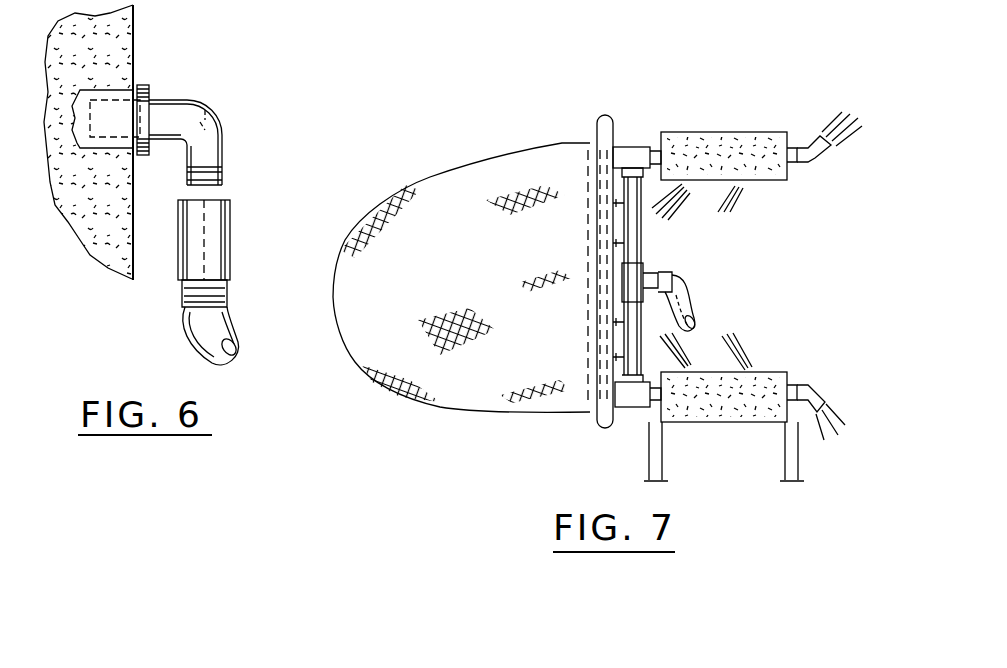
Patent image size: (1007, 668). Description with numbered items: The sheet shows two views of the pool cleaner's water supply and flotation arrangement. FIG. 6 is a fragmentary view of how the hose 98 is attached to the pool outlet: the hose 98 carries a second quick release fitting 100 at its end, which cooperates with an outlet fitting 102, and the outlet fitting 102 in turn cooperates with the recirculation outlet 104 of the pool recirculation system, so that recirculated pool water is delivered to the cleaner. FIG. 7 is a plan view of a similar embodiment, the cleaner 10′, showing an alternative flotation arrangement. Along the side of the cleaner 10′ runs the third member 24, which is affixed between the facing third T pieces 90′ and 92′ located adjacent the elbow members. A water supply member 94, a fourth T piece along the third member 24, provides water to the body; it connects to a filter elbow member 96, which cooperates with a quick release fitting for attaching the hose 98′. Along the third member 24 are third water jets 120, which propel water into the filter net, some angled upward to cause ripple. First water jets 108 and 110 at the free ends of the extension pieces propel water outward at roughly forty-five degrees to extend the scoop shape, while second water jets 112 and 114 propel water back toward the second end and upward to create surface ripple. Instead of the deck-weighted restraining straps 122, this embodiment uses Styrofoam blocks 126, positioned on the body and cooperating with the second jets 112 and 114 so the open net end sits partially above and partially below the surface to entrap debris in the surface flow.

In FIG. 7, the cleaner 10′ is at (474, 151).
In FIG. 7, the third member 24 is at (641, 240).
In FIG. 7, the third T piece 90′ is at (632, 146).
In FIG. 7, the third T piece 92′ is at (618, 420).
In FIG. 7, the water supply member 94 is at (646, 272).
In FIG. 7, the filter elbow member 96 is at (668, 283).
In FIG. 6, the hose 98 is at (182, 326).
In FIG. 7, the hose 98′ is at (688, 306).
In FIG. 6, the second quick release fitting 100 is at (224, 237).
In FIG. 6, the outlet fitting 102 is at (200, 118).
In FIG. 6, the recirculation outlet 104 is at (110, 115).
In FIG. 7, the first water jet 108 is at (822, 133).
In FIG. 7, the first water jet 110 is at (812, 398).
In FIG. 7, the second water jet 112 is at (690, 182).
In FIG. 7, the second water jet 114 is at (684, 372).
In FIG. 7, the third water jets 120 is at (618, 353).
In FIG. 7, the restraining straps 122 is at (662, 466).
In FIG. 7, the Styrofoam block 126 is at (706, 132).